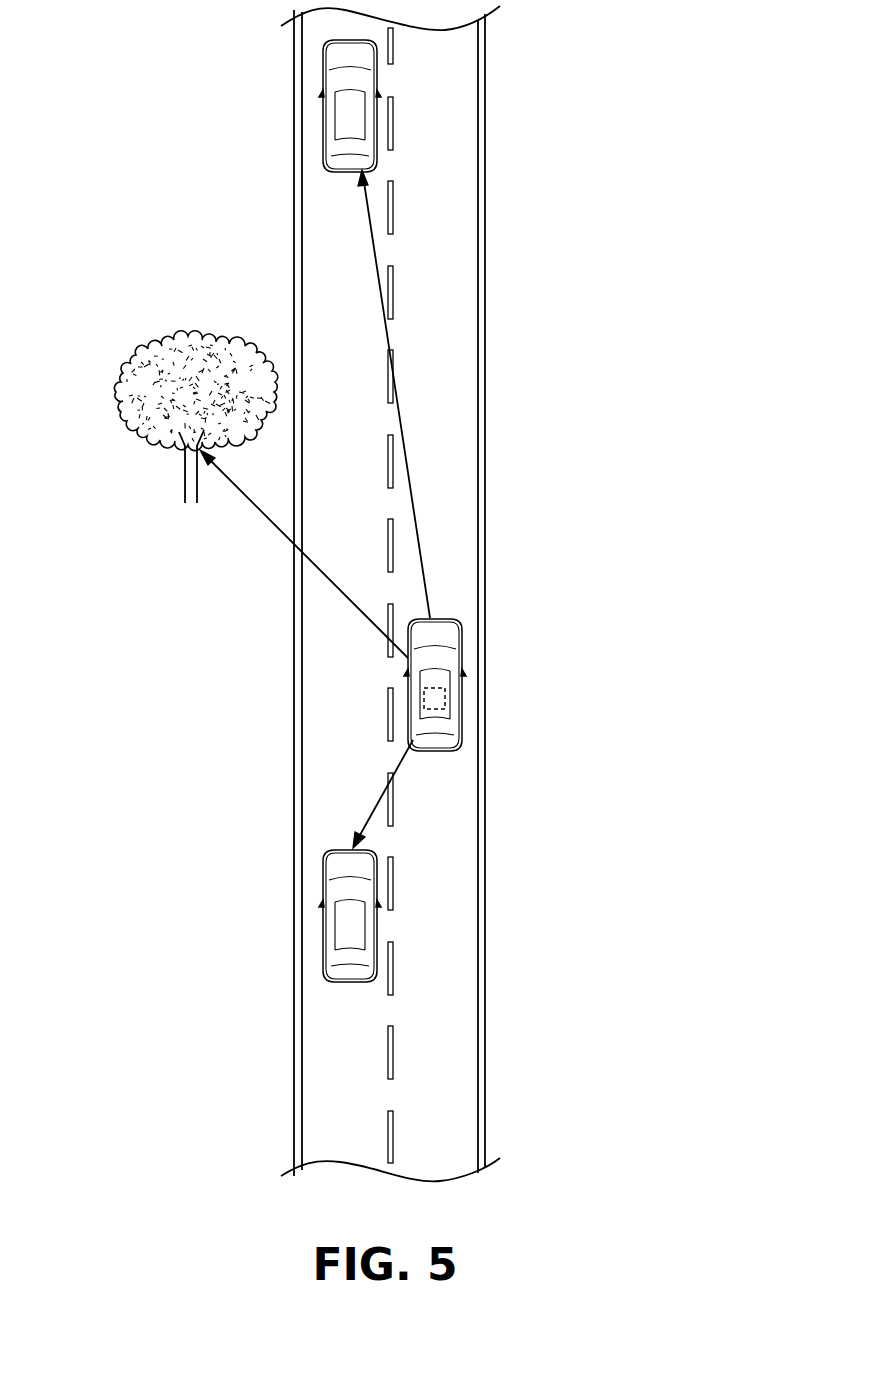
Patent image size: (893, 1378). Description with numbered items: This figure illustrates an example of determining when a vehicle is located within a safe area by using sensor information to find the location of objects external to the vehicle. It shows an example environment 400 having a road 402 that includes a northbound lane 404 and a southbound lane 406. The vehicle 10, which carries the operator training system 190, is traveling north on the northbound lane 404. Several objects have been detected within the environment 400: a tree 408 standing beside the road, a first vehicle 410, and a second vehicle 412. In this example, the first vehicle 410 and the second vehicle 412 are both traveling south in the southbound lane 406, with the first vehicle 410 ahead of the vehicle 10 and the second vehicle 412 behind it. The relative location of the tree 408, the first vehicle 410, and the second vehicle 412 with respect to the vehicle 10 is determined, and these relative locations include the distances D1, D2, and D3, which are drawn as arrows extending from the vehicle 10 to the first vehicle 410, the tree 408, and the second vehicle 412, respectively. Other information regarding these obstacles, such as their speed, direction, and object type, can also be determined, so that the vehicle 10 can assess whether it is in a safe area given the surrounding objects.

The environment 400 is at (81, 173).
The road 402 is at (443, 447).
The northbound lane 404 is at (452, 357).
The southbound lane 406 is at (337, 296).
The tree 408 is at (182, 478).
The first vehicle 410 is at (340, 76).
The second vehicle 412 is at (347, 893).
The vehicle 10 is at (445, 667).
The operator training system 190 is at (458, 700).
The distance D1 is at (390, 332).
The distance D2 is at (280, 532).
The distance D3 is at (400, 765).